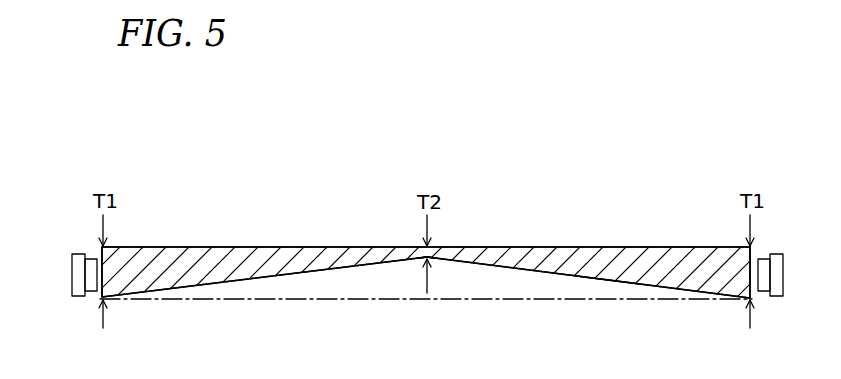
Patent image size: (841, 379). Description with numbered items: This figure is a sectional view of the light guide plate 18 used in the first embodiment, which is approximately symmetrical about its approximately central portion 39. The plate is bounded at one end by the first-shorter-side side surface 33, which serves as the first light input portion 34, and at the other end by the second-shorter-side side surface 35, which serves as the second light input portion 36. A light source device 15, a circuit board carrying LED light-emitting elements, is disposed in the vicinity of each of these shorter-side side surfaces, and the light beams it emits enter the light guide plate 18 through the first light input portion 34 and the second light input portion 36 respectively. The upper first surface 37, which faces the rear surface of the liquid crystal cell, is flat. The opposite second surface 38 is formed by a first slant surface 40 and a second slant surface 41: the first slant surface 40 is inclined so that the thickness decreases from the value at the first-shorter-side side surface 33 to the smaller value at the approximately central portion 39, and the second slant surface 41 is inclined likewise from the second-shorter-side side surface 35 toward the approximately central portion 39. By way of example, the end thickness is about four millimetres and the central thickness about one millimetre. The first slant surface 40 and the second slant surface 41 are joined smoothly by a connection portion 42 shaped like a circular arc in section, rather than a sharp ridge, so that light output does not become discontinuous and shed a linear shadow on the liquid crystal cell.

The light source device 15 is at (72, 277).
The light guide plate 18 is at (314, 218).
The first-shorter-side side surface 33 is at (101, 247).
The first light input portion 34 is at (101, 298).
The second-shorter-side side surface 35 is at (751, 247).
The second light input portion 36 is at (751, 299).
The first surface 37 is at (620, 246).
The second surface 38 is at (611, 284).
The approximately central portion 39 is at (431, 260).
The first slant surface 40 is at (316, 273).
The second slant surface 41 is at (540, 273).
The connection portion 42 is at (443, 306).